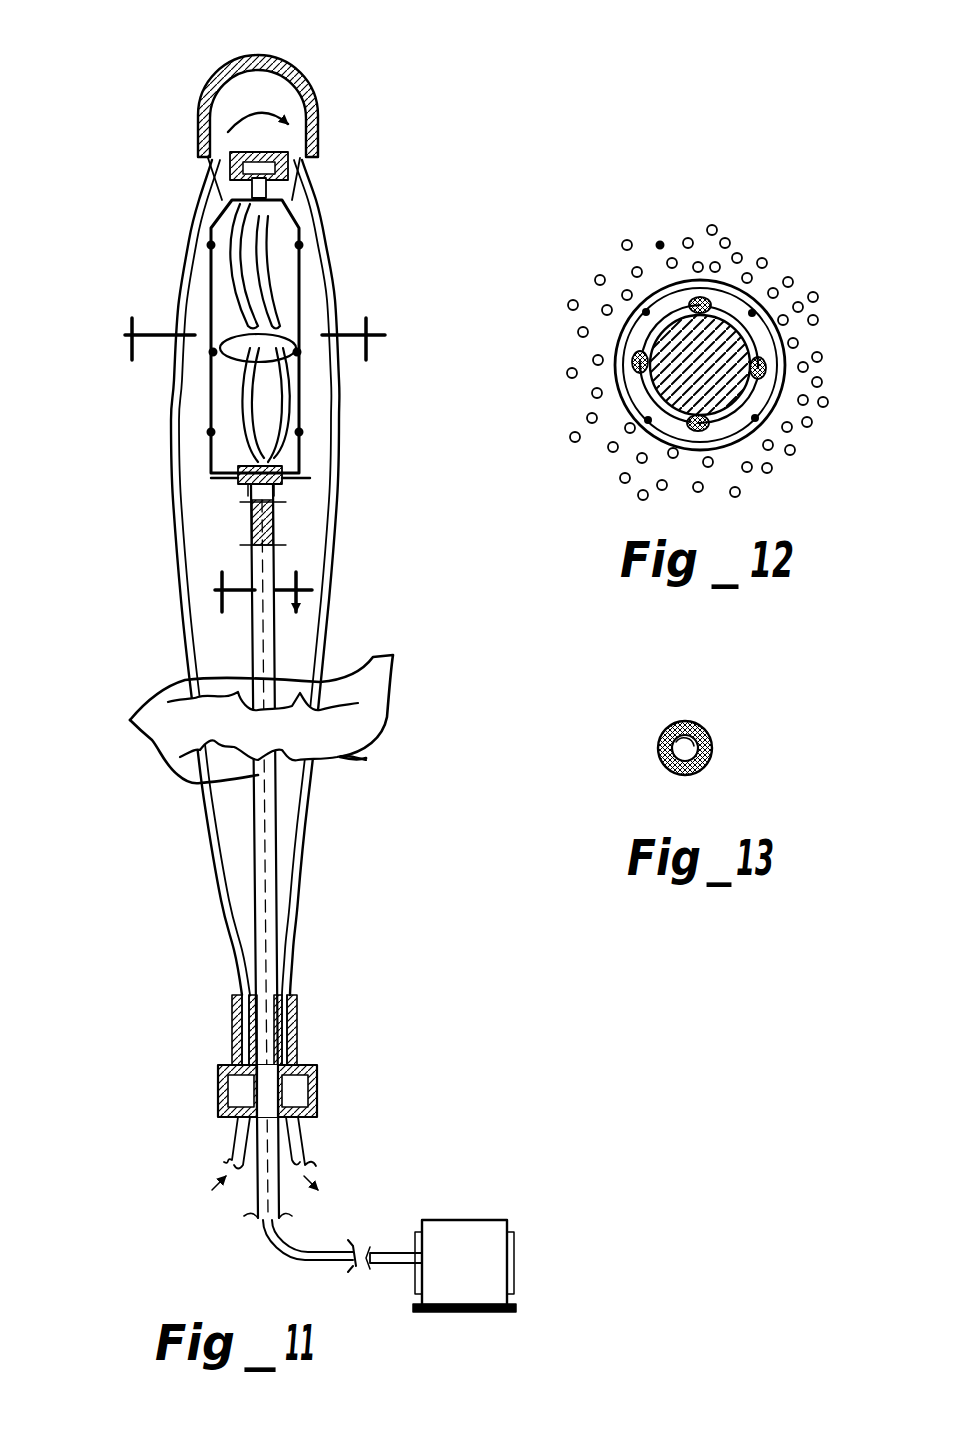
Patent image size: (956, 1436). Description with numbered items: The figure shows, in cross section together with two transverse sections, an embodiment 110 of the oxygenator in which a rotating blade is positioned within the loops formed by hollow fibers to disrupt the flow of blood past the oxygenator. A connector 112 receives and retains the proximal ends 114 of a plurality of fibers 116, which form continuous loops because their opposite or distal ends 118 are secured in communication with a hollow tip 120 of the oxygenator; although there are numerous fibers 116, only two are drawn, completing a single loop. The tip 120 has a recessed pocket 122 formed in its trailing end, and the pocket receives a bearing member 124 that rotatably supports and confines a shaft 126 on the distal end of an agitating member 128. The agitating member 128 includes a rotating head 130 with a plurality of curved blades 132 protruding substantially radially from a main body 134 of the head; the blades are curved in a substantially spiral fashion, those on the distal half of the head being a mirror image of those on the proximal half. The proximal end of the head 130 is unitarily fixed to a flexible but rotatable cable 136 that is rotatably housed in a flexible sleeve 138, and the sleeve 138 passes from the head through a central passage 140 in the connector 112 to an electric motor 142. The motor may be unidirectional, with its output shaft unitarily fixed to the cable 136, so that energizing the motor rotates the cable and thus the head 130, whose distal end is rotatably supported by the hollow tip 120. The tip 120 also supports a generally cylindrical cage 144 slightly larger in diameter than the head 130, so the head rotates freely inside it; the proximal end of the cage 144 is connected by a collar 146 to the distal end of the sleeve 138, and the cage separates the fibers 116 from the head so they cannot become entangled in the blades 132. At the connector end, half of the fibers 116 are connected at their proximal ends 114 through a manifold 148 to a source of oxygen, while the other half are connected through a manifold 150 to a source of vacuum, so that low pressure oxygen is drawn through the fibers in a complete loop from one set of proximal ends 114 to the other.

In FIG. 11, the embodiment 110 is at (452, 178).
In FIG. 11, the connector 112 is at (300, 1015).
In FIG. 11, the proximal ends 114 is at (232, 1160).
In FIG. 11, the fibers 116 is at (177, 598).
In FIG. 12, the fibers 116 is at (605, 308).
In FIG. 11, the distal ends 118 is at (206, 158).
In FIG. 11, the hollow tip 120 is at (300, 86).
In FIG. 11, the recessed pocket 122 is at (232, 168).
In FIG. 11, the bearing member 124 is at (242, 190).
In FIG. 11, the shaft 126 is at (276, 187).
In FIG. 11, the agitating member 128 is at (262, 255).
In FIG. 11, the rotating head 130 is at (212, 368).
In FIG. 12, the rotating head 130 is at (707, 343).
In FIG. 11, the curved blades 132 is at (236, 432).
In FIG. 12, the curved blades 132 is at (642, 362).
In FIG. 11, the main body 134 is at (294, 380).
In FIG. 11, the rotatable cable 136 is at (266, 524).
In FIG. 13, the rotatable cable 136 is at (688, 722).
In FIG. 11, the flexible sleeve 138 is at (162, 717).
In FIG. 13, the flexible sleeve 138 is at (712, 752).
In FIG. 11, the central passage 140 is at (258, 513).
In FIG. 11, the electric motor 142 is at (476, 1230).
In FIG. 11, the cylindrical cage 144 is at (212, 447).
In FIG. 12, the cylindrical cage 144 is at (613, 368).
In FIG. 11, the collar 146 is at (282, 480).
In FIG. 11, the manifold 148 is at (218, 1094).
In FIG. 11, the manifold 150 is at (318, 1090).